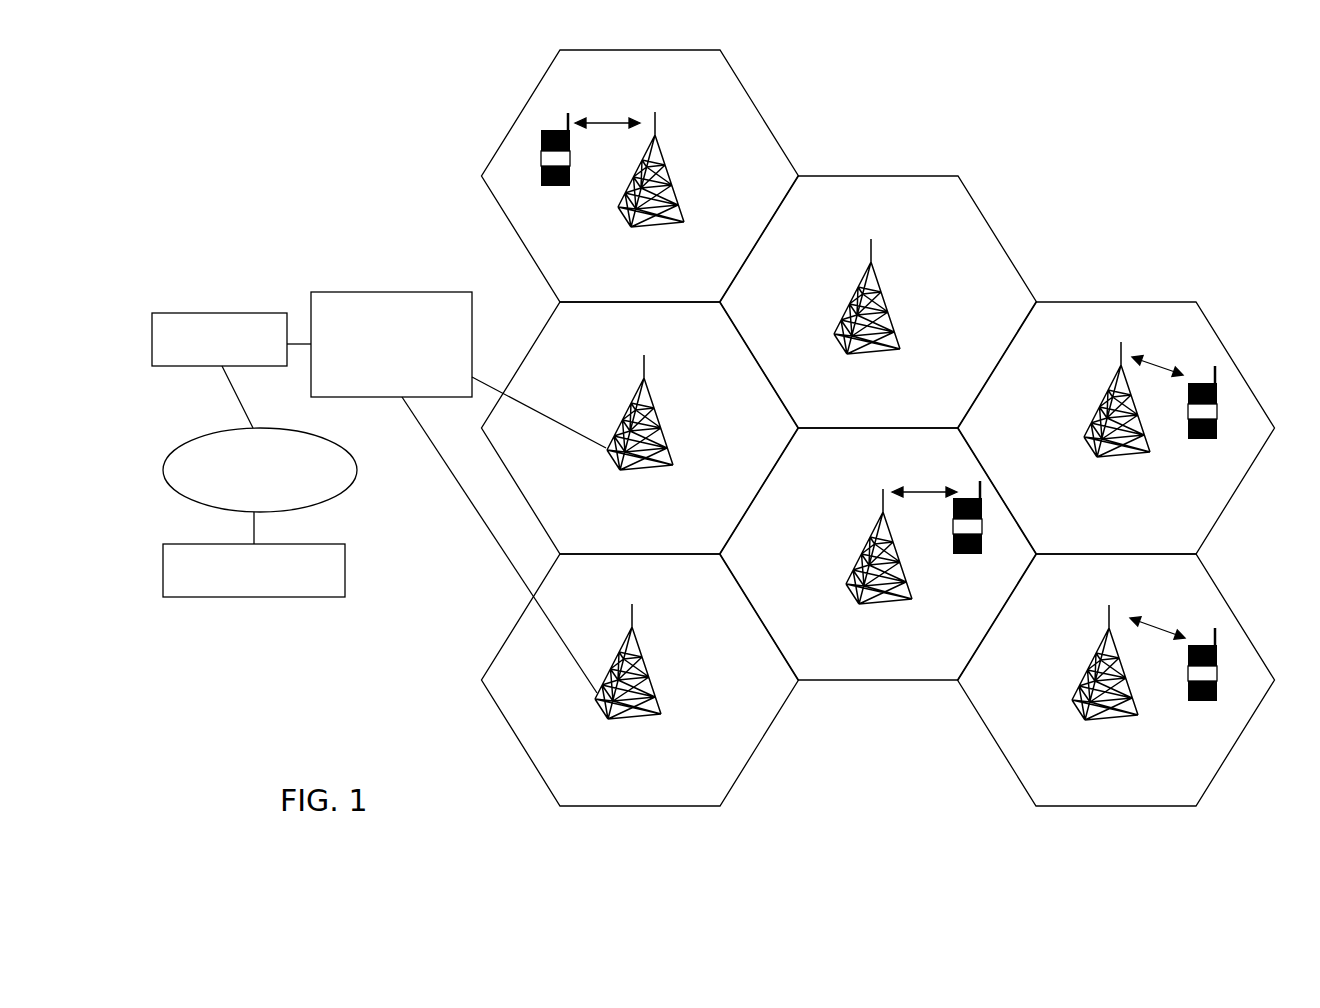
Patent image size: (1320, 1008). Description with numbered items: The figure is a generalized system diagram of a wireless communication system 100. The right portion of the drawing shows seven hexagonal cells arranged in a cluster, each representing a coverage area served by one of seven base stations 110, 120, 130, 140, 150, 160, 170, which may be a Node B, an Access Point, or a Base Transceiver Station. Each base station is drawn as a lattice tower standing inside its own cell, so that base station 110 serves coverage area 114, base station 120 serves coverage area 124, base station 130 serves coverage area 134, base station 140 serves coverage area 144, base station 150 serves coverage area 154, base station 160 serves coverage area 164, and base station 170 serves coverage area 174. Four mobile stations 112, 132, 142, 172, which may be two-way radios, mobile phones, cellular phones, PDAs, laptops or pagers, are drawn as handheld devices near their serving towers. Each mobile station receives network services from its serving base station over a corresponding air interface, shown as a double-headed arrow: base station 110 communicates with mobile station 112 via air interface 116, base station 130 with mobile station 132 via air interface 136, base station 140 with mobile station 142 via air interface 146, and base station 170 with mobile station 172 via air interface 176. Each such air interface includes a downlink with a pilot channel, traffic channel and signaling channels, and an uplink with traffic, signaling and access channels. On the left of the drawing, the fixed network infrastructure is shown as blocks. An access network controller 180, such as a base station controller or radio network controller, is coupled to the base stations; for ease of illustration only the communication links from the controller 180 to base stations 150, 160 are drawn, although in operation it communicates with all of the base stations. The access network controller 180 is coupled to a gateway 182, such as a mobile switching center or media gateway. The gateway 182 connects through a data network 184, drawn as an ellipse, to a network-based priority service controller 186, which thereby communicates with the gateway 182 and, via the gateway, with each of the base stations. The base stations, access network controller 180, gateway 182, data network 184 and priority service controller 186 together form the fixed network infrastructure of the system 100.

The communication system 100 is at (395, 700).
The base station 110 is at (670, 188).
The mobile station 112 is at (548, 187).
The coverage area 114 is at (618, 272).
The air interface 116 is at (607, 121).
The base station 120 is at (868, 267).
The coverage area 124 is at (936, 262).
The base station 130 is at (1108, 400).
The mobile station 132 is at (1218, 428).
The coverage area 134 is at (1003, 429).
The air interface 136 is at (1153, 364).
The base station 140 is at (1097, 662).
The mobile station 142 is at (1217, 690).
The coverage area 144 is at (1094, 775).
The air interface 146 is at (1153, 630).
The base station 150 is at (640, 650).
The coverage area 154 is at (618, 775).
The base station 160 is at (652, 387).
The coverage area 164 is at (628, 512).
The base station 170 is at (872, 537).
The mobile station 172 is at (982, 532).
The coverage area 174 is at (856, 650).
The air interface 176 is at (927, 490).
The access network controller 180 is at (402, 290).
The gateway 182 is at (208, 312).
The data network 184 is at (355, 480).
The priority service controller 186 is at (253, 597).